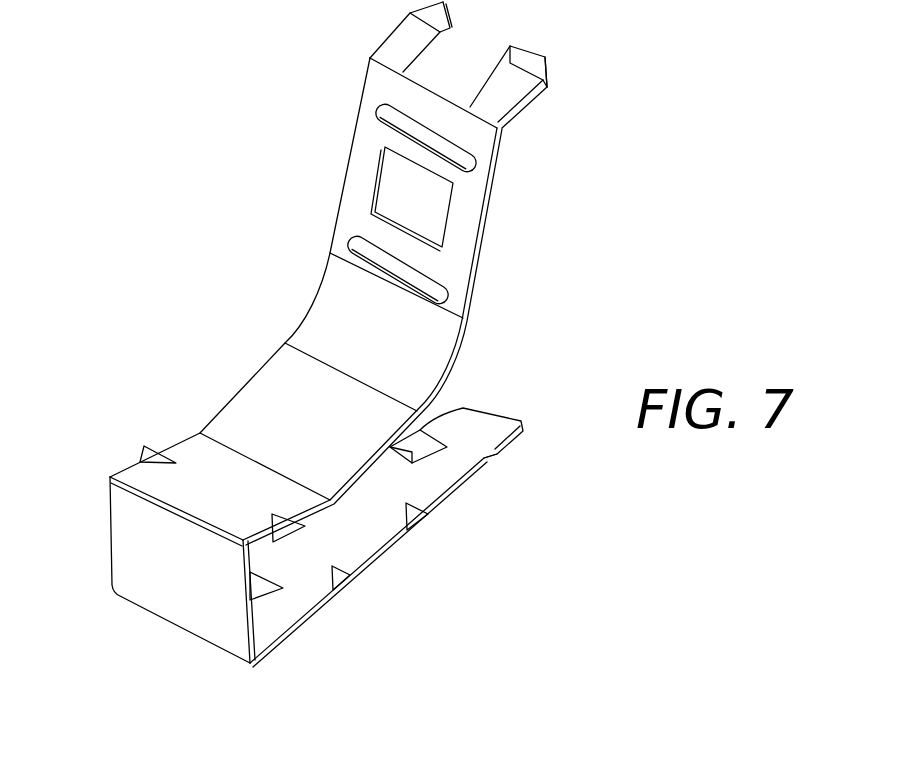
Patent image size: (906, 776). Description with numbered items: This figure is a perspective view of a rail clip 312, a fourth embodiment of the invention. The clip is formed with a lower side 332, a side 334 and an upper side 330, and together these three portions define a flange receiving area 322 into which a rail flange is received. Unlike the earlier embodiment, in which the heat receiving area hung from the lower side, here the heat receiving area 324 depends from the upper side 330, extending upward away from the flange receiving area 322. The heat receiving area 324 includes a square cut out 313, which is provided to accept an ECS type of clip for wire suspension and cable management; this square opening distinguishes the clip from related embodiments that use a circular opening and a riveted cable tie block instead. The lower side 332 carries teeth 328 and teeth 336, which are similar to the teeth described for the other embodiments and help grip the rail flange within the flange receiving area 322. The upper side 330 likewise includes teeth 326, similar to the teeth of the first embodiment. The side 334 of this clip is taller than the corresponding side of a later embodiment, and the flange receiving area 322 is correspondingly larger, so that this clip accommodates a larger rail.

The rail clip 312 is at (218, 295).
The square cut out 313 is at (413, 195).
The flange receiving area 322 is at (302, 559).
The heat receiving area 324 is at (525, 110).
The teeth 326 is at (153, 458).
The teeth 328 is at (417, 527).
The upper side 330 is at (336, 444).
The lower side 332 is at (422, 506).
The side 334 is at (147, 557).
The teeth 336 is at (463, 408).